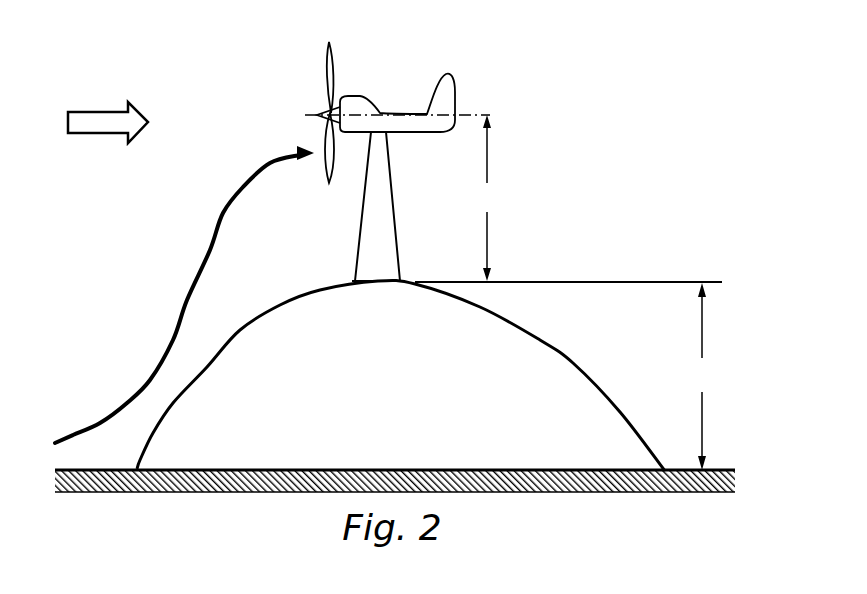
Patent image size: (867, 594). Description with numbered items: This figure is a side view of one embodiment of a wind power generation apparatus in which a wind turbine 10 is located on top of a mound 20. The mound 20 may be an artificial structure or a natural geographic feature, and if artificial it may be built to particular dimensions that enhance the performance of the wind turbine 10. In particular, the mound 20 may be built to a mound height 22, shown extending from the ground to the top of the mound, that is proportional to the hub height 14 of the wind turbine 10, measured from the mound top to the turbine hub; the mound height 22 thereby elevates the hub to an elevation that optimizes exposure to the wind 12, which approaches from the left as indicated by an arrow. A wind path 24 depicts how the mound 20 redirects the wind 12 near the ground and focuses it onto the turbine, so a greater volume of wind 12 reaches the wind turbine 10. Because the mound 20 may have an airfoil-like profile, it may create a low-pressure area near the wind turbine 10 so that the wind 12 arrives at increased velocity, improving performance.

The wind turbine 10 is at (470, 75).
The wind 12 is at (92, 112).
The hub height 14 is at (508, 190).
The mound 20 is at (573, 364).
The mound height 22 is at (720, 366).
The wind path 24 is at (183, 310).